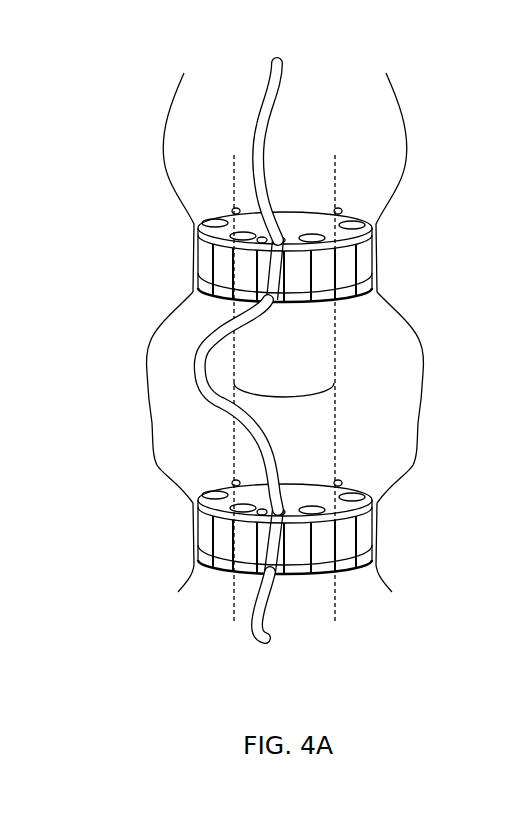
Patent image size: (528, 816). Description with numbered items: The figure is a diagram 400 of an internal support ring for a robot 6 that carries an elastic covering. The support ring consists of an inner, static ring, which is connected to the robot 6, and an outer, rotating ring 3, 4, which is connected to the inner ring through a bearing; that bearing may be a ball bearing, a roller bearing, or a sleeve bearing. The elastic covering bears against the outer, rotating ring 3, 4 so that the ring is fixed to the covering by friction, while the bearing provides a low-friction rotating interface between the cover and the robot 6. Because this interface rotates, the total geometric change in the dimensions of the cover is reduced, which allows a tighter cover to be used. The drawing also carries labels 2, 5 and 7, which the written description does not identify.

The diagram of support ring 400 is at (108, 62).
The balloon 2 is at (200, 213).
The outer rotating ring 3 is at (200, 265).
The outer rotating ring 4 is at (373, 264).
The balloon body 5 is at (400, 458).
The robot 6 is at (330, 378).
The wire slack loop 7 is at (250, 423).